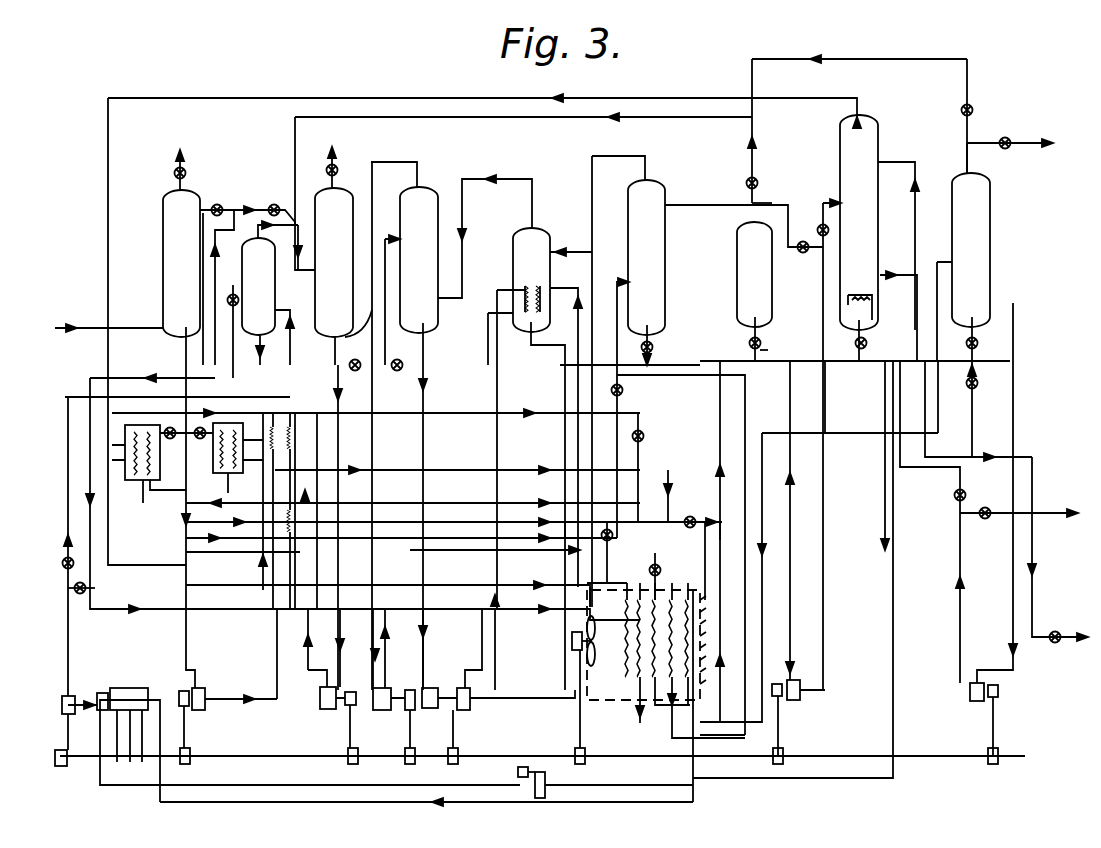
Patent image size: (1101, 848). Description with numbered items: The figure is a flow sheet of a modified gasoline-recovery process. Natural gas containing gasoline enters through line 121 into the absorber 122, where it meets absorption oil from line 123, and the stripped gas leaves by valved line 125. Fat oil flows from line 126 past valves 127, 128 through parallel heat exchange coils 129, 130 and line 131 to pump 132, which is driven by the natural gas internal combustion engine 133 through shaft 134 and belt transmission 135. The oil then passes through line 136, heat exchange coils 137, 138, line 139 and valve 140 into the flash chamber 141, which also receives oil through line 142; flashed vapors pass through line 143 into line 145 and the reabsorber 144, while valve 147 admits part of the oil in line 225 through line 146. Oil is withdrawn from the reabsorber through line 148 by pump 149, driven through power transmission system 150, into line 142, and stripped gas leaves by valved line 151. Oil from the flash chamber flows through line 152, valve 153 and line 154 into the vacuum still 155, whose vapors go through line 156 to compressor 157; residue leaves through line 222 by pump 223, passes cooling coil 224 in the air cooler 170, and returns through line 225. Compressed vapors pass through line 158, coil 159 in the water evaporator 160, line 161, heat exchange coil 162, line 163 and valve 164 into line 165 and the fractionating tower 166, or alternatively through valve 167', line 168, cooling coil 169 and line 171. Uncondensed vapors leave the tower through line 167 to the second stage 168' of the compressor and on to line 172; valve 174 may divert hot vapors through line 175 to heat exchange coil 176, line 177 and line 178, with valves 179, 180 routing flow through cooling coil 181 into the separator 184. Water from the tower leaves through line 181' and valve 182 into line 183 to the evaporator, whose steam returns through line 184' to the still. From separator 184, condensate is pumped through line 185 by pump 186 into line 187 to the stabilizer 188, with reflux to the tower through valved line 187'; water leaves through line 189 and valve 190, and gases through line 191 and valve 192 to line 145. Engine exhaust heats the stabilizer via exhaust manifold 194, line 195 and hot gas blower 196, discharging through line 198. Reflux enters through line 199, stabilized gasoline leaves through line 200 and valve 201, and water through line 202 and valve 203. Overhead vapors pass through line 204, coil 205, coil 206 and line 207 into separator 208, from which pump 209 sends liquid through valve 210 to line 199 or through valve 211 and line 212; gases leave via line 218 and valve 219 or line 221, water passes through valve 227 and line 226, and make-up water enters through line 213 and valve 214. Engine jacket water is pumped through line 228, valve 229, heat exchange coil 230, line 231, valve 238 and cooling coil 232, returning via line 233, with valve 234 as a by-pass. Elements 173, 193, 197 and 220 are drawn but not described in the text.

The line 121 is at (163, 318).
The absorber 122 is at (163, 218).
The line 123 is at (222, 190).
The valved line 125 is at (174, 176).
The line 126 is at (185, 360).
The valve 127 is at (172, 440).
The valve 128 is at (208, 420).
The heat exchange coil 129 is at (170, 427).
The heat exchange coil 130 is at (215, 465).
The line 131 is at (186, 582).
The pump 132 is at (235, 668).
The natural gas internal combustion engine 133 is at (123, 725).
The shaft 134 is at (195, 755).
The belt transmission 135 is at (195, 722).
The line 136 is at (272, 650).
The heat exchange coil 137 is at (292, 510).
The heat exchange coil 138 is at (252, 510).
The line 139 is at (230, 331).
The valve 140 is at (223, 289).
The flash chamber 141 is at (260, 286).
The line 142 is at (305, 473).
The line 143 is at (263, 226).
The reabsorber 144 is at (334, 262).
The line 145 is at (470, 128).
The line 146 is at (235, 205).
The valve 147 is at (282, 195).
The line 148 is at (359, 316).
The pump 149 is at (320, 690).
The power transmission system 150 is at (345, 742).
The valved line 151 is at (332, 160).
The line 152 is at (268, 349).
The valve 153 is at (357, 527).
The line 154 is at (387, 426).
The still 155 is at (419, 260).
The line 156 is at (390, 160).
The compressor 157 is at (382, 708).
The line 158 is at (495, 447).
The coil 159 is at (525, 285).
The water evaporator 160 is at (532, 280).
The line 161 is at (488, 312).
The heat exchange coil 162 is at (230, 493).
The line 163 is at (376, 421).
The valve 164 is at (625, 392).
The line 165 is at (617, 282).
The fractionating tower 166 is at (633, 200).
The line 167 is at (578, 368).
The valve 167' is at (665, 429).
The line 168 is at (663, 451).
The second stage of compressor 168' is at (432, 678).
The cooling coil 169 is at (518, 492).
The air cooler 170 is at (592, 660).
The line 171 is at (642, 487).
The line 172 is at (565, 348).
The line 173 is at (575, 522).
The valve 174 is at (570, 510).
The line 175 is at (413, 510).
The heat exchange coil 176 is at (145, 418).
The line 177 is at (368, 540).
The line 178 is at (717, 506).
The valve 179 is at (648, 577).
The valve 180 is at (700, 510).
The cooling coil 181 is at (586, 603).
The line 181' is at (636, 338).
The valve 182 is at (655, 348).
The line 183 is at (575, 248).
The separator 184 is at (755, 274).
The line 184' is at (496, 222).
The line 185 is at (819, 577).
The pump 186 is at (795, 700).
The line 187 is at (815, 432).
The valved line 187' is at (744, 213).
The stabilizer 188 is at (872, 158).
The line 189 is at (755, 338).
The valve 190 is at (780, 350).
The line 191 is at (755, 203).
The valve 192 is at (758, 182).
The reboiler 193 is at (866, 312).
The exhaust manifold 194 is at (108, 690).
The line 195 is at (288, 788).
The hot gas blower 196 is at (545, 772).
The line 197 is at (860, 788).
The line 198 is at (910, 532).
The line 199 is at (912, 237).
The line 200 is at (1038, 580).
The valve 201 is at (1055, 632).
The line 202 is at (858, 350).
The valve 203 is at (860, 361).
The line 204 is at (270, 98).
The coil 205 is at (326, 511).
The coil 206 is at (696, 707).
The line 207 is at (742, 655).
The separator 208 is at (975, 210).
The pump 209 is at (968, 682).
The valve 210 is at (965, 488).
The valve 211 is at (1000, 500).
The line 212 is at (1068, 495).
The line 213 is at (966, 398).
The valve 214 is at (958, 371).
The line 218 is at (965, 155).
The valve 219 is at (975, 108).
The valve 220 is at (1010, 138).
The line 221 is at (1025, 150).
The line 222 is at (430, 385).
The pump 223 is at (462, 708).
The cooling coil 224 is at (646, 641).
The line 225 is at (388, 455).
The line 226 is at (993, 392).
The valve 227 is at (977, 338).
The line 228 is at (65, 638).
The valve 229 is at (65, 575).
The heat exchange coil 230 is at (308, 510).
The line 231 is at (140, 385).
The cooling coil 232 is at (699, 561).
The line 233 is at (636, 802).
The valve 234 is at (72, 588).
The valve 238 is at (607, 538).